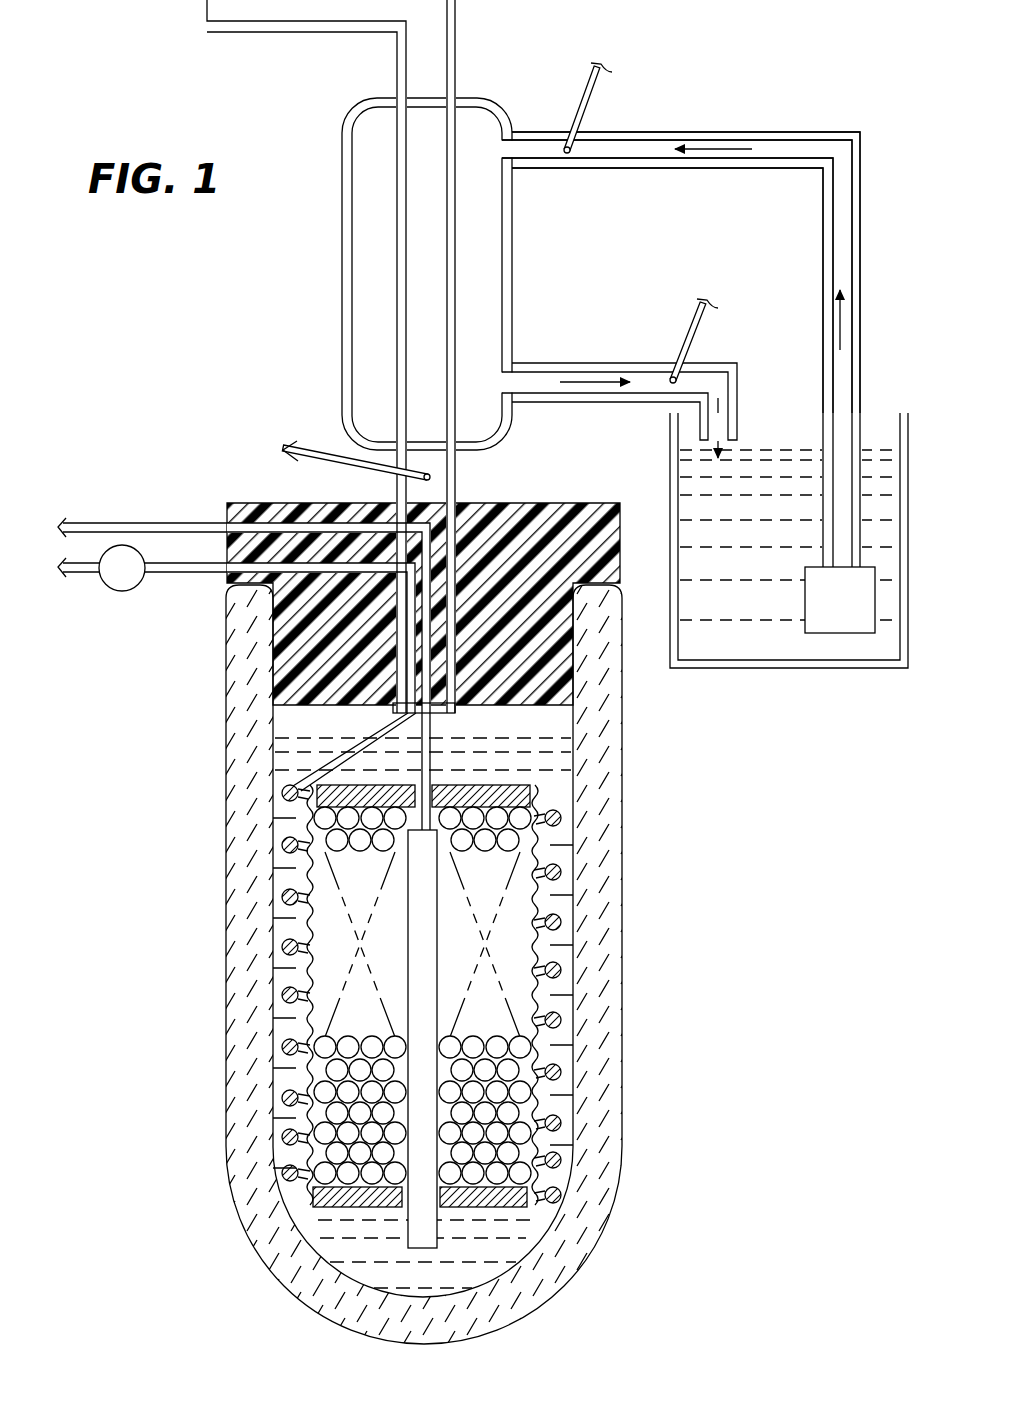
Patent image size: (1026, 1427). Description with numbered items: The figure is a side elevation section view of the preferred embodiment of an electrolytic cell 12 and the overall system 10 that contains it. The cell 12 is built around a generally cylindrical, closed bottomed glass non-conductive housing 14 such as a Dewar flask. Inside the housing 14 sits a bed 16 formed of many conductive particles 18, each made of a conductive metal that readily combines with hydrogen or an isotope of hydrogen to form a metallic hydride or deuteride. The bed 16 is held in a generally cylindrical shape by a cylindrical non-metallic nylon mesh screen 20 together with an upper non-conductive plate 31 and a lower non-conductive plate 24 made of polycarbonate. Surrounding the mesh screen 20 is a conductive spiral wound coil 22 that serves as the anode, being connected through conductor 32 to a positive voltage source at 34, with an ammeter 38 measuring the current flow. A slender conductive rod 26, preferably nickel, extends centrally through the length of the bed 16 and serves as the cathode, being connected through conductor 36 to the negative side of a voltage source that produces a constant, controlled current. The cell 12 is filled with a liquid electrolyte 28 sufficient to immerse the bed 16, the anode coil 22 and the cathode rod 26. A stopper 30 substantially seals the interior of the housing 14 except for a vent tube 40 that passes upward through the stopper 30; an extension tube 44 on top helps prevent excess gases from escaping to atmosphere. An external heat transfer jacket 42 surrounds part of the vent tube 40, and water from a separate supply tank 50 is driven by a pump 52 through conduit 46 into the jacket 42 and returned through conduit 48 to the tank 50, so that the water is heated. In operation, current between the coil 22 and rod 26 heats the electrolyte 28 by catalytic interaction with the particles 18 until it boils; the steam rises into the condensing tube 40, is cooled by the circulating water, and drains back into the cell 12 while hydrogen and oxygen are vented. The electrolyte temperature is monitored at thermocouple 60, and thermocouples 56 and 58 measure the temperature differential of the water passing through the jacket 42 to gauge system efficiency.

The electrolytic cell and system 10 is at (205, 445).
The electrolytic cell 12 is at (626, 874).
The non-conductive housing 14 is at (622, 930).
The bed 16 is at (492, 1025).
The conductive particles 18 is at (507, 1072).
The nylon mesh screen 20 is at (535, 1110).
The spiral wound coil 22 is at (288, 947).
The lower non-conductive plate 24 is at (500, 1210).
The conductive rod 26 is at (377, 1227).
The liquid electrolyte 28 is at (566, 768).
The stopper 30 is at (578, 503).
The upper non-conductive plate 31 is at (503, 785).
The conductor 32 is at (395, 718).
The positive voltage source 34 is at (75, 575).
The conductor 36 is at (75, 523).
The ammeter 38 is at (122, 591).
The vent tube 40 is at (460, 480).
The heat transfer jacket 42 is at (510, 279).
The extension tube 44 is at (265, 32).
The conduit 46 is at (708, 132).
The conduit 48 is at (553, 363).
The supply tank 50 is at (785, 668).
The pump 52 is at (838, 633).
The thermocouple 56 is at (701, 332).
The thermocouple 58 is at (593, 103).
The thermocouple 60 is at (313, 450).